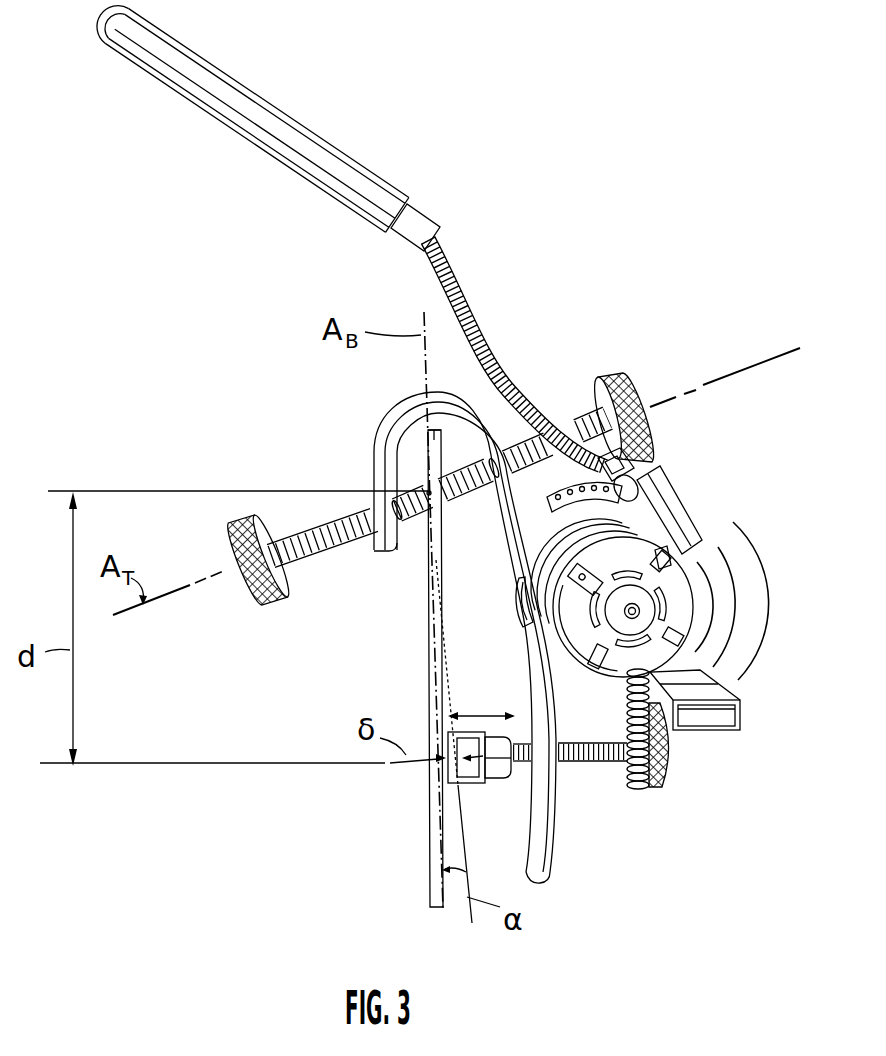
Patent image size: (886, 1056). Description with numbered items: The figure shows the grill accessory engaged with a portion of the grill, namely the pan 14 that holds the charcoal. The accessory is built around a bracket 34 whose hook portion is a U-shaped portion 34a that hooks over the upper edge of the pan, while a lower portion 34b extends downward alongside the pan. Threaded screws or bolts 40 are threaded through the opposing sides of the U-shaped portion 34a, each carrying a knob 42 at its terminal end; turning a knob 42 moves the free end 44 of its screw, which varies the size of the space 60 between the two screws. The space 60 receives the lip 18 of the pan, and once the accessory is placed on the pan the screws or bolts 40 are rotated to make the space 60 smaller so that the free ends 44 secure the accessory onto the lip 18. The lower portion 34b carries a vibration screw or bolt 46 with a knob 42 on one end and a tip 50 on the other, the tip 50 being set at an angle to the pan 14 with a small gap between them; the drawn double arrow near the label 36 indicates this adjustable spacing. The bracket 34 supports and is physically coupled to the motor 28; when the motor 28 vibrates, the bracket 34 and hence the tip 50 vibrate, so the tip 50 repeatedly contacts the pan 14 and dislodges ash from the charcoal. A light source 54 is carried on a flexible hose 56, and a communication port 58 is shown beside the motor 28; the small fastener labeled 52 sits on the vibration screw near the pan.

The pan 14 is at (433, 661).
The lip of the pan 18 is at (431, 434).
The motor 28 is at (684, 592).
The bracket 34 is at (472, 639).
The U-shaped portion 34a is at (391, 404).
The lower portion 34b is at (553, 851).
The gap adjustment tab 36 is at (522, 628).
The threaded screw or bolt 40 is at (576, 430).
The knob 42 is at (632, 370).
The free end 44 is at (455, 490).
The vibration screw or bolt 46 is at (592, 744).
The tip 50 is at (469, 783).
The nut 52 is at (500, 773).
The light source 54 is at (263, 115).
The hose 56 is at (470, 307).
The communication port 58 is at (708, 684).
The space 60 is at (427, 493).